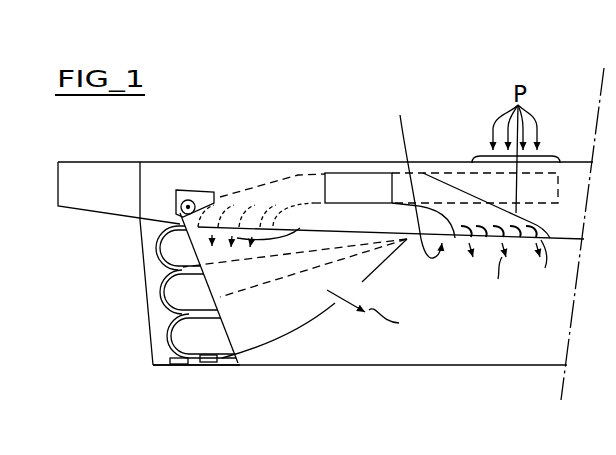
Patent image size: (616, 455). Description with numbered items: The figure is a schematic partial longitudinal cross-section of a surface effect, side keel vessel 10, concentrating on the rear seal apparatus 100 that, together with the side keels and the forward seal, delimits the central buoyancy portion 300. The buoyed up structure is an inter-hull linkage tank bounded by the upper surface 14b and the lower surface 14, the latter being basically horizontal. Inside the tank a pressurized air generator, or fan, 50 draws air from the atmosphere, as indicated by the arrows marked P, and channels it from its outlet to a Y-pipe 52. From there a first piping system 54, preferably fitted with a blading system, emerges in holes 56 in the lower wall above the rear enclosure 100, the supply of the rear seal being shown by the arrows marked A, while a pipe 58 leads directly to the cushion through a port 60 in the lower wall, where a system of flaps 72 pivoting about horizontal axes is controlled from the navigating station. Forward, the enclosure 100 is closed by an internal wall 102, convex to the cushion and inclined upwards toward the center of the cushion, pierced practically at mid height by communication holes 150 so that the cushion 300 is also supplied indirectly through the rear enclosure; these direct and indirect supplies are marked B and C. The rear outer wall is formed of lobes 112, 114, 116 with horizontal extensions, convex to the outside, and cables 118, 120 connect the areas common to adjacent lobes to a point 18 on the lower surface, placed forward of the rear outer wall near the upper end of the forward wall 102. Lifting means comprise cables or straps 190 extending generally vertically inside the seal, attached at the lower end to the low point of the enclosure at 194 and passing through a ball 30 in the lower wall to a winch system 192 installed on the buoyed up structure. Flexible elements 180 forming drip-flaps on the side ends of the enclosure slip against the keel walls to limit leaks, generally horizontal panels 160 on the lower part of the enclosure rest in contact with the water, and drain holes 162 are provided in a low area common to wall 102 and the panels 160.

The surface effect vessel 10 is at (563, 128).
The lower surface 14 is at (422, 172).
The upper surface 14b is at (435, 162).
The point on the lower surface 18 is at (410, 242).
The ball 30 is at (173, 217).
The pressurized air generator 50 is at (523, 192).
The Y-pipe 52 is at (315, 157).
The first piping system 54 is at (278, 176).
The holes 56 is at (222, 228).
The pipe 58 is at (362, 173).
The port 60 is at (483, 249).
The system of flaps 72 is at (522, 242).
The rear seal apparatus 100 is at (349, 311).
The internal wall 102 is at (273, 343).
The lobe 112 is at (155, 243).
The lobe 114 is at (160, 292).
The lobe 116 is at (168, 361).
The cable 118 is at (350, 239).
The cable 120 is at (261, 286).
The communication holes 150 is at (358, 291).
The panels 160 is at (177, 366).
The drain holes 162 is at (198, 372).
The flexible elements 180 is at (156, 261).
The cables 190 is at (227, 320).
The winch system 192 is at (182, 190).
The low point of enclosure 194 is at (238, 363).
The central buoyancy portion 300 is at (553, 325).